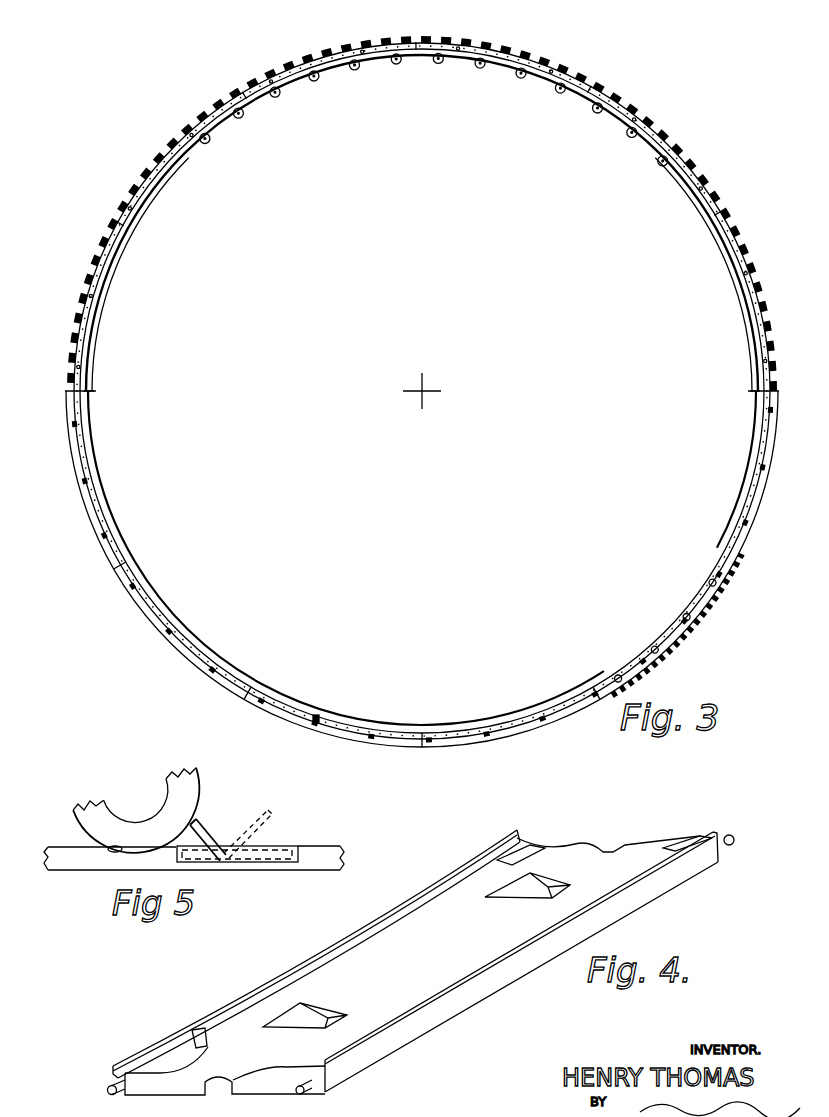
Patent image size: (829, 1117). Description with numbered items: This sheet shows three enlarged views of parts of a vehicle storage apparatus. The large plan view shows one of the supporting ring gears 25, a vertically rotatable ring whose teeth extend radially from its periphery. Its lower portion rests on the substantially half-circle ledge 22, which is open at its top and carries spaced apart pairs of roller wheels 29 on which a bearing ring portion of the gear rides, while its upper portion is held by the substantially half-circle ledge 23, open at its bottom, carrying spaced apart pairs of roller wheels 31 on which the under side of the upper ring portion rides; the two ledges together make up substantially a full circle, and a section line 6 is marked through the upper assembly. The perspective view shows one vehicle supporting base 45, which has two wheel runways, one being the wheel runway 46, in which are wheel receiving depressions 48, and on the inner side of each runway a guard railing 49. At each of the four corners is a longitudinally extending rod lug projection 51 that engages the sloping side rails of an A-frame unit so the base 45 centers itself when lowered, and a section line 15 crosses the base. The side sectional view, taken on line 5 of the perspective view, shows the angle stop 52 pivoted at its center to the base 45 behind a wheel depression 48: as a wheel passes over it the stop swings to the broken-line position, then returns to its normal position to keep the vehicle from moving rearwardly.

In FIG. 3, the one half circle ledge 22 is at (145, 600).
In FIG. 3, the one half circle ledge 23 is at (752, 328).
In FIG. 3, the supporting ring gear 25 is at (157, 158).
In FIG. 3, the roller wheel 29 is at (316, 722).
In FIG. 3, the roller wheel 31 is at (240, 115).
In FIG. 3, the section line 6- 6 is at (388, 109).
In FIG. 5, the vehicle supporting base 45 is at (327, 847).
In FIG. 4, the vehicle supporting base 45 is at (255, 1090).
In FIG. 4, the wheel runway 46 is at (330, 962).
In FIG. 5, the wheel receiving depression 48 is at (113, 852).
In FIG. 4, the wheel receiving depression 48 is at (170, 1052).
In FIG. 4, the guard railing 49 is at (288, 962).
In FIG. 4, the rod lug projection 51 is at (108, 1088).
In FIG. 5, the angle stop 52 is at (222, 848).
In FIG. 4, the concrete top 15 is at (392, 881).
In FIG. 4, the section line 5- 5 is at (112, 1040).